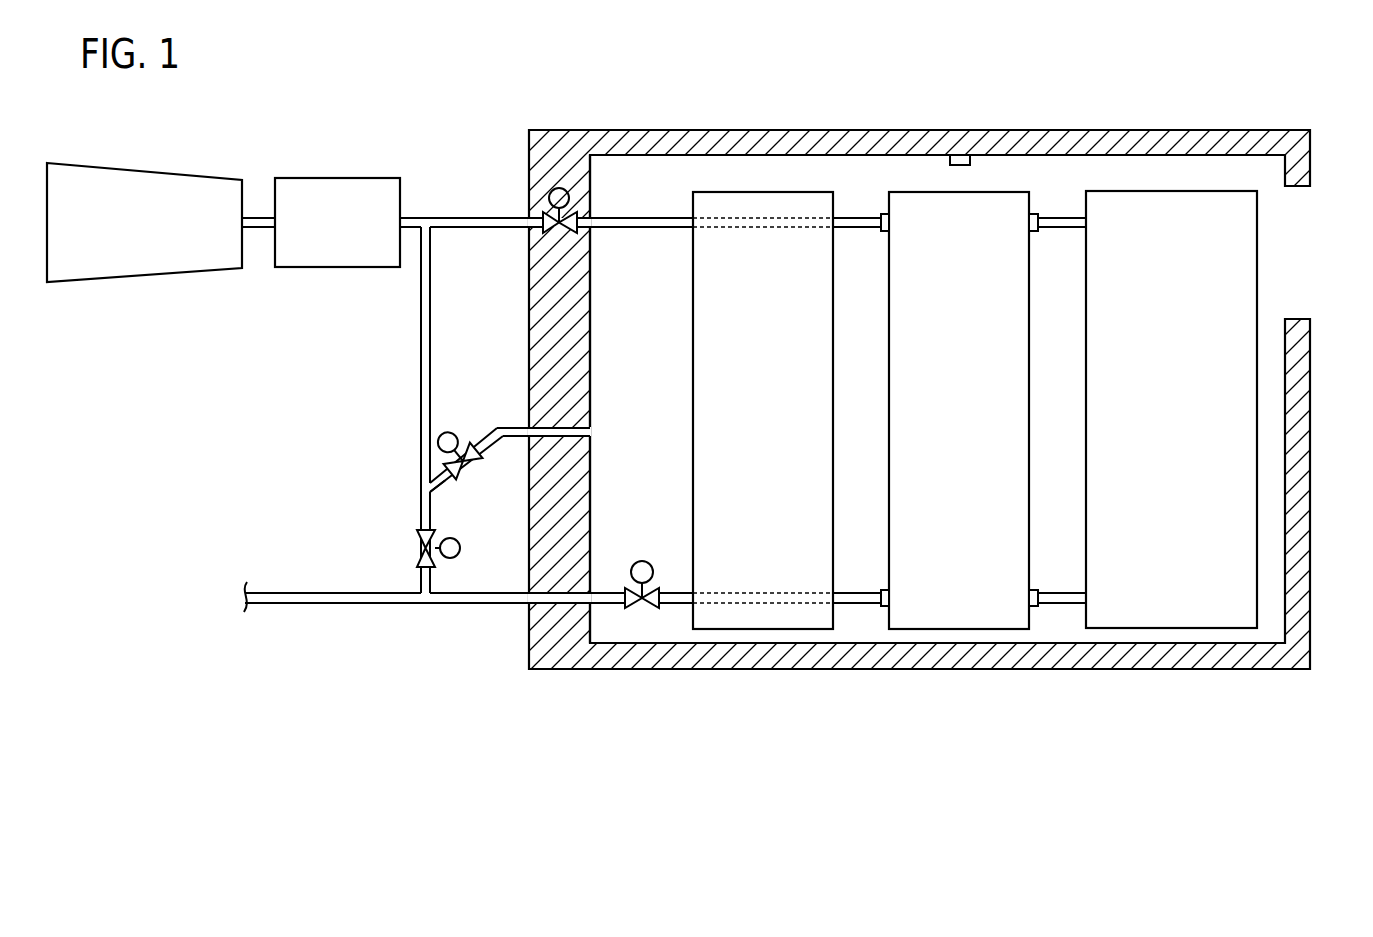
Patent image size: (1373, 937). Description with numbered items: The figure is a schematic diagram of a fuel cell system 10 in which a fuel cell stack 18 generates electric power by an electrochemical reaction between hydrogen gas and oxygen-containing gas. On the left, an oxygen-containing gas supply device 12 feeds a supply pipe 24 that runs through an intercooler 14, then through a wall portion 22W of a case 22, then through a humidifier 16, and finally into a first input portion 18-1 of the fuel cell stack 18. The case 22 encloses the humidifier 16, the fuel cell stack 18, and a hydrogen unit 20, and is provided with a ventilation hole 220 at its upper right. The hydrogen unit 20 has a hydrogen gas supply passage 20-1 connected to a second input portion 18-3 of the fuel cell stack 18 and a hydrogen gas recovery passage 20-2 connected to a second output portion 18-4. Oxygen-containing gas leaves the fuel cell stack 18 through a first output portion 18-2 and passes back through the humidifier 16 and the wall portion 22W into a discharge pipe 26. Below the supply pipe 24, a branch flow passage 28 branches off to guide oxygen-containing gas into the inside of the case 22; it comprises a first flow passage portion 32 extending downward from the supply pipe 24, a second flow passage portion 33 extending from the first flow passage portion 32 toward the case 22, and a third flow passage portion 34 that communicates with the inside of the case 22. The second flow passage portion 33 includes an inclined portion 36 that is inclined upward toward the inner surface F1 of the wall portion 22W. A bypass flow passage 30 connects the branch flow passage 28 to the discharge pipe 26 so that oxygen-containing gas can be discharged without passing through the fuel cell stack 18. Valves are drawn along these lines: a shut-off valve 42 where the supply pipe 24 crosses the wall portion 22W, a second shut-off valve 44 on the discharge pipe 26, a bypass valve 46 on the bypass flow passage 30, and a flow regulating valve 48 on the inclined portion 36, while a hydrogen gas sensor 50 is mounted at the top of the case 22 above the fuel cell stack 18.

The fuel cell system 10 is at (1238, 57).
The oxygen-containing gas supply device 12 is at (163, 171).
The intercooler 14 is at (348, 177).
The humidifier 16 is at (734, 191).
The fuel cell stack 18 is at (942, 191).
The first input portion 18-1 is at (881, 214).
The first output portion 18-2 is at (884, 590).
The second input portion 18-3 is at (1038, 214).
The second output portion 18-4 is at (1035, 590).
The hydrogen unit 20 is at (1171, 191).
The hydrogen gas supply passage 20-1 is at (1050, 228).
The hydrogen gas recovery passage 20-2 is at (1063, 592).
The case 22 is at (942, 376).
The wall portion 22W is at (565, 319).
The ventilation hole 220 is at (1305, 198).
The supply pipe 24 is at (473, 217).
The discharge pipe 26 is at (470, 606).
The branch flow passage 28 is at (451, 380).
The bypass flow passage 30 is at (421, 580).
The first flow passage portion 32 is at (421, 437).
The second flow passage portion 33 is at (513, 428).
The third flow passage portion 34 is at (557, 428).
The inclined portion 36 is at (446, 481).
The shut-off valve 42 is at (560, 188).
The second shut-off valve 44 is at (648, 562).
The bypass valve 46 is at (417, 558).
The flow regulating valve 48 is at (478, 473).
The hydrogen gas sensor 50 is at (962, 167).
The inner surface F1 is at (592, 490).